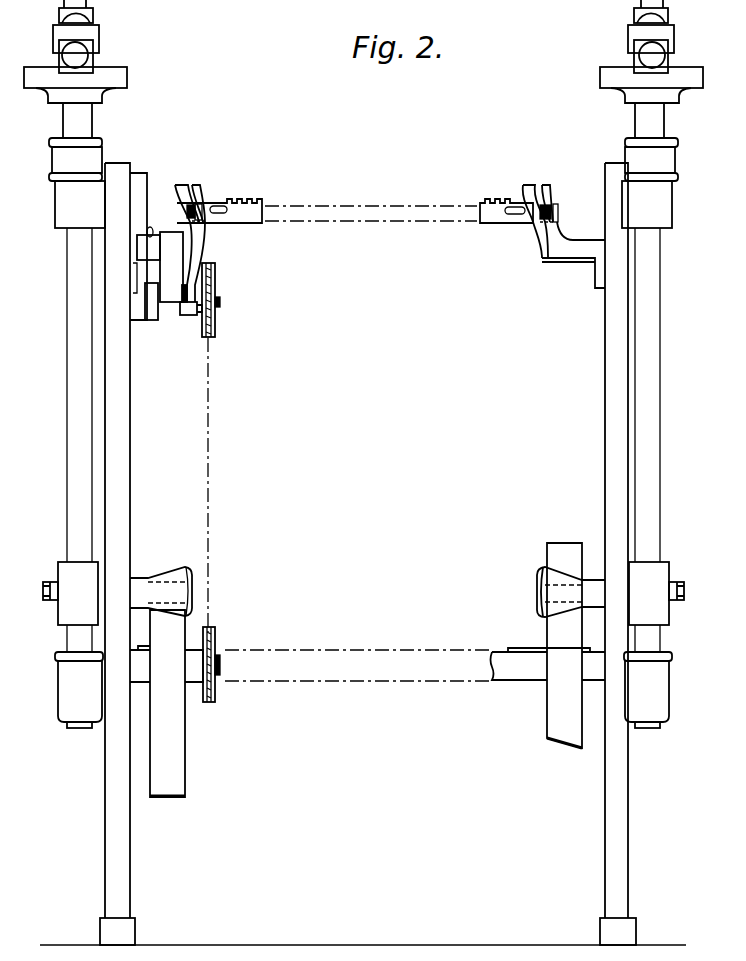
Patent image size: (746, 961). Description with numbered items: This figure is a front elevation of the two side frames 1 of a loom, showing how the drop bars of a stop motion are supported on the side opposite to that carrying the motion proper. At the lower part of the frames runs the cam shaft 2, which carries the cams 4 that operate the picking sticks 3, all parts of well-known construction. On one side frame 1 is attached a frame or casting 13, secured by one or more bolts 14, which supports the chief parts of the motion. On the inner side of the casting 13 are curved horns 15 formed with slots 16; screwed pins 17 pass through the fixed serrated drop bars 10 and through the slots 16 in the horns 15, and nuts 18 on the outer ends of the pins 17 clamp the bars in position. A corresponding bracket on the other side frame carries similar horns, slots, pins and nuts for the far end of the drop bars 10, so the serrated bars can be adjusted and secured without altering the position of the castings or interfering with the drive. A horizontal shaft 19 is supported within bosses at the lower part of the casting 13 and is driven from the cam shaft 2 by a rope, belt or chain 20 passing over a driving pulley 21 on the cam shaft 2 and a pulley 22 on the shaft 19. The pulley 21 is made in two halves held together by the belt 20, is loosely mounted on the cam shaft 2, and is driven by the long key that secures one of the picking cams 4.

The side frame 1 is at (122, 174).
The cam shaft 2 is at (195, 680).
The picking sticks 3 is at (84, 53).
The cams 4 is at (175, 768).
The fixed serrated drop bars 10 is at (262, 222).
The frame or casting 13 is at (143, 189).
The bolts 14 is at (149, 227).
The curved horns 15 is at (190, 190).
The slots 16 is at (200, 203).
The screwed pins 17 is at (203, 216).
The nuts 18 is at (201, 226).
The horizontal shaft 19 is at (220, 302).
The rope, belt or chain 20 is at (210, 448).
The driving pulley 21 is at (217, 700).
The pulley 22 is at (214, 333).